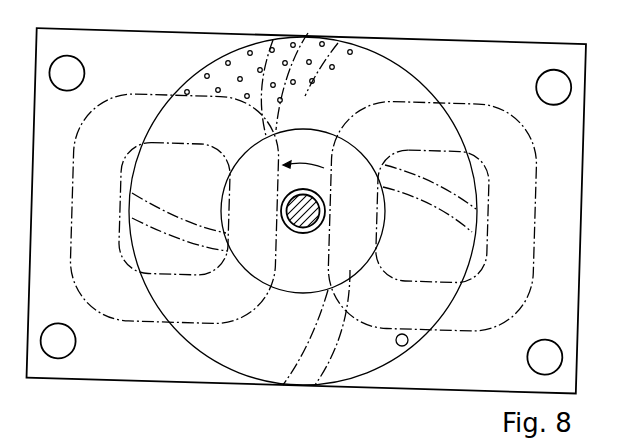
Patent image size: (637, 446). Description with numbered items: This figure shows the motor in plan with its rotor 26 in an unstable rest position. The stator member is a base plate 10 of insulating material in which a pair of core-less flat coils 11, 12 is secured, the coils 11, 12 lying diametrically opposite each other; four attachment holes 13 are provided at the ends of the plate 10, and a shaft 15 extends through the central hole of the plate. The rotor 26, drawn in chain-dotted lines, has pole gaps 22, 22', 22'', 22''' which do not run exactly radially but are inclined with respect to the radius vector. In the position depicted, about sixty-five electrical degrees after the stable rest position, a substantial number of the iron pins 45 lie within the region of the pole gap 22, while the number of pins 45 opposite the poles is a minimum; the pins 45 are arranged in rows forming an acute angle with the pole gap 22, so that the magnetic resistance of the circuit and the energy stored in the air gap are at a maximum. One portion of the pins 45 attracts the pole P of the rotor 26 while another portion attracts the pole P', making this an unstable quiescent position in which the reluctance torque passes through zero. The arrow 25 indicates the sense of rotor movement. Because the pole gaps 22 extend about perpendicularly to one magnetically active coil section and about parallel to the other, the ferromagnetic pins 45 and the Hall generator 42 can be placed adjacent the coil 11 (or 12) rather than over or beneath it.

The base plate 10 is at (464, 58).
The flat coil 11 is at (84, 156).
The flat coil 12 is at (527, 182).
The attachment holes 13 is at (548, 78).
The shaft 15 is at (303, 228).
The pole gap 22 is at (299, 76).
The pole gap 22' is at (180, 222).
The pole gap 22'' is at (311, 327).
The pole gap 22''' is at (429, 198).
The direction of rotation 25 is at (303, 159).
The rotor 26 is at (344, 366).
The Hall generator 42 is at (406, 345).
The iron pins 45 is at (266, 44).
The pole P is at (406, 74).
The pole P' is at (159, 83).